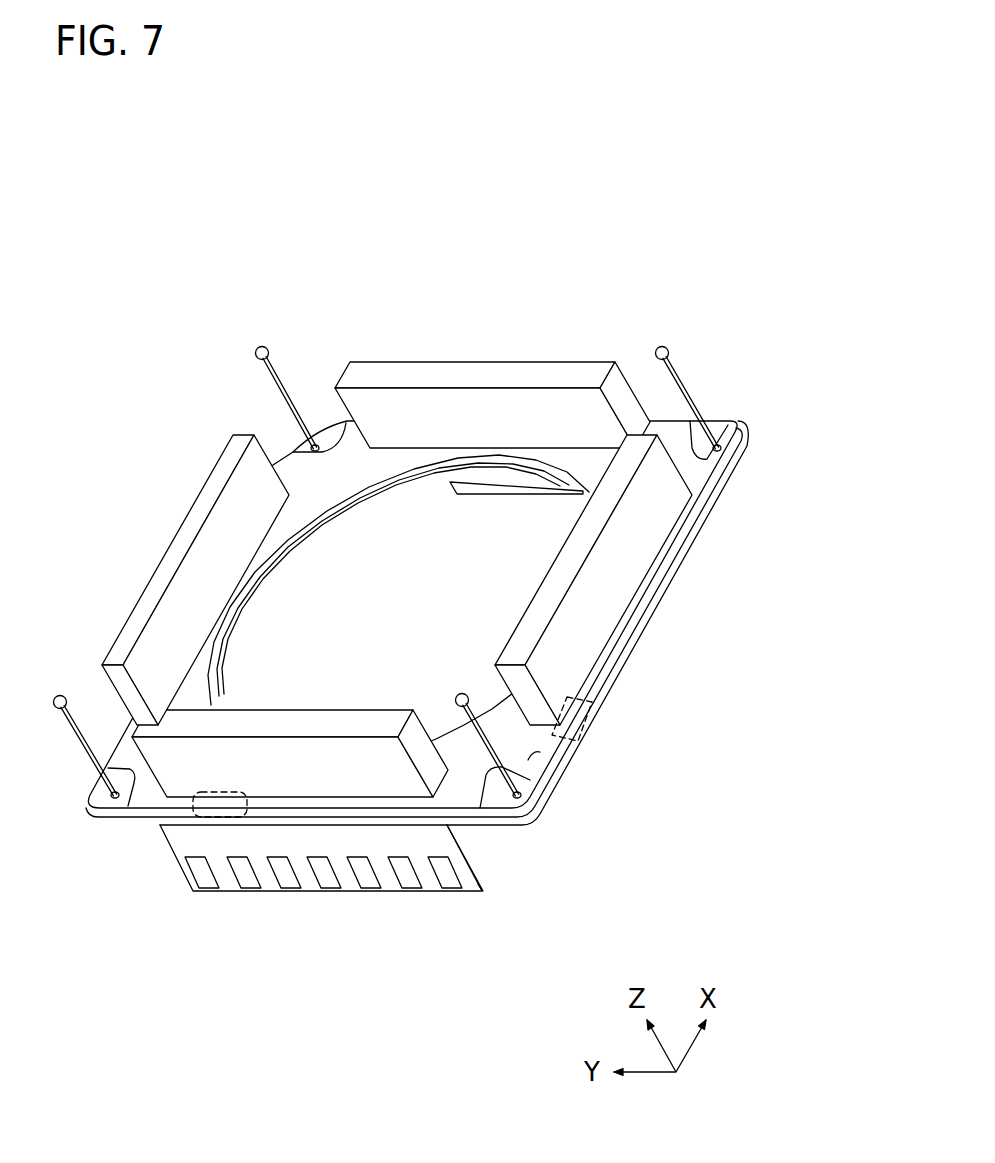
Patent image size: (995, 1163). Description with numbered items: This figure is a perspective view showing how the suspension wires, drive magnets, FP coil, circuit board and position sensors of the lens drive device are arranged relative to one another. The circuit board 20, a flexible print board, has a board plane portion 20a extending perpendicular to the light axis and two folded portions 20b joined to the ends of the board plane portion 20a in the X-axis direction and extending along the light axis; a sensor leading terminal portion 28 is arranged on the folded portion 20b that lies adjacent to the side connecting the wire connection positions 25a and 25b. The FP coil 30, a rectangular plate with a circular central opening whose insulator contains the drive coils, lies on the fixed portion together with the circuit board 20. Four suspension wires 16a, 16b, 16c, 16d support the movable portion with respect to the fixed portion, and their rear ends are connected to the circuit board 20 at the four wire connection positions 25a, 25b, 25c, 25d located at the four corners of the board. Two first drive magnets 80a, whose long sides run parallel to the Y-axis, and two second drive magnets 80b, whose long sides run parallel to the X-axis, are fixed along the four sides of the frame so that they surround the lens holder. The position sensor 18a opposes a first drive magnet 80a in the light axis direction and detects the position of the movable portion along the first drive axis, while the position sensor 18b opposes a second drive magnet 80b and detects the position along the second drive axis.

The suspension wire 16a is at (74, 737).
The suspension wire 16b is at (492, 757).
The suspension wire 16c is at (691, 400).
The suspension wire 16d is at (289, 397).
The position sensor 18a is at (200, 815).
The position sensor 18b is at (585, 725).
The circuit board 20 is at (752, 436).
The board plane portion 20a is at (651, 622).
The folded portion 20b is at (505, 486).
The wire connection position 25a is at (117, 799).
The wire connection position 25b is at (519, 800).
The wire connection position 25c is at (722, 450).
The wire connection position 25d is at (293, 448).
The sensor leading terminal portion 28 is at (288, 872).
The FP coil 30 is at (532, 752).
The first drive magnet 80a is at (590, 375).
The second drive magnet 80b is at (170, 565).